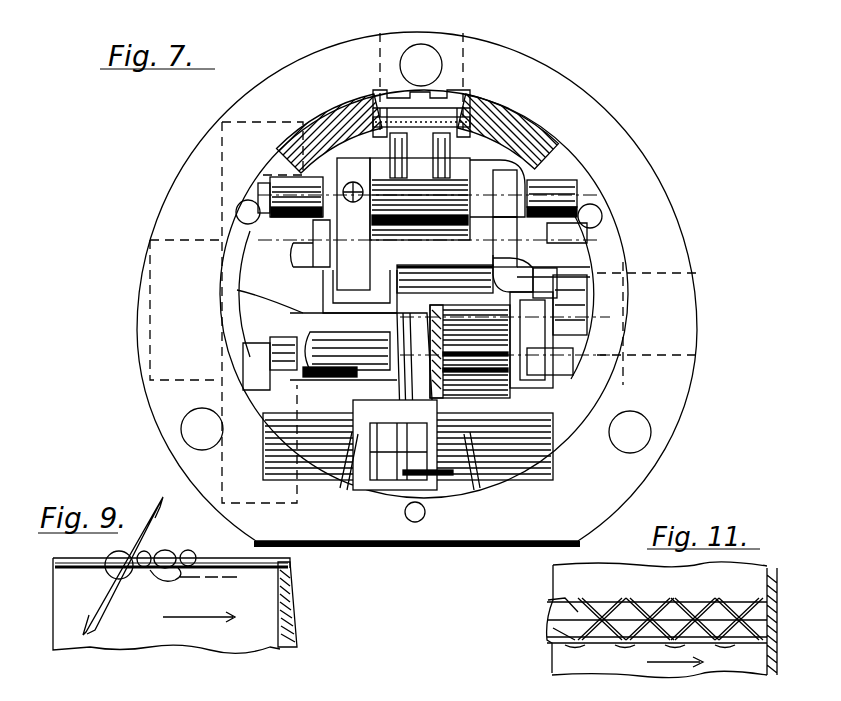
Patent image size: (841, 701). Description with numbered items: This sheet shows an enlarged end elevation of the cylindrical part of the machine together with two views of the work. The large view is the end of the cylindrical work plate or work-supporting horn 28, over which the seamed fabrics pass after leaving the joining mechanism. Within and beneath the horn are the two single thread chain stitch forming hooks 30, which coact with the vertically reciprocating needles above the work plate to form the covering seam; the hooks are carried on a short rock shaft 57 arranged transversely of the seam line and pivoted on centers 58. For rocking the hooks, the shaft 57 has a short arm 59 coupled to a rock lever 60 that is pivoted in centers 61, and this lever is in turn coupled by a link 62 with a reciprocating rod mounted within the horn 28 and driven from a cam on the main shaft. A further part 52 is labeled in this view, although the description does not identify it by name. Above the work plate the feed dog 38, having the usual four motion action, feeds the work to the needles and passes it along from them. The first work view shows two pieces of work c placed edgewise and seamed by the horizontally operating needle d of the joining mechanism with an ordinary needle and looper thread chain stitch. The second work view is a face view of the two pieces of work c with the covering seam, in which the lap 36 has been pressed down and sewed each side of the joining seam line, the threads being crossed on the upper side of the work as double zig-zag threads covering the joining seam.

In FIG. 7, the cylindrical work plate or work-supporting horn 28 is at (540, 163).
In FIG. 7, the single thread chain stitch forming hooks 30 is at (433, 165).
In FIG. 7, the feed dog 38 is at (378, 90).
In FIG. 7, the hub 52 is at (312, 176).
In FIG. 7, the rock shaft 57 is at (330, 203).
In FIG. 7, the centers 58 is at (521, 167).
In FIG. 7, the short arm 59 is at (357, 288).
In FIG. 7, the rock lever 60 is at (303, 292).
In FIG. 7, the centers 61 is at (352, 450).
In FIG. 7, the link 62 is at (330, 370).
In FIG. 9, the lap 36 is at (290, 568).
In FIG. 11, the lap 36 is at (770, 612).
In FIG. 9, the pieces of work c is at (307, 628).
In FIG. 11, the pieces of work c is at (556, 578).
In FIG. 9, the needle d is at (155, 527).